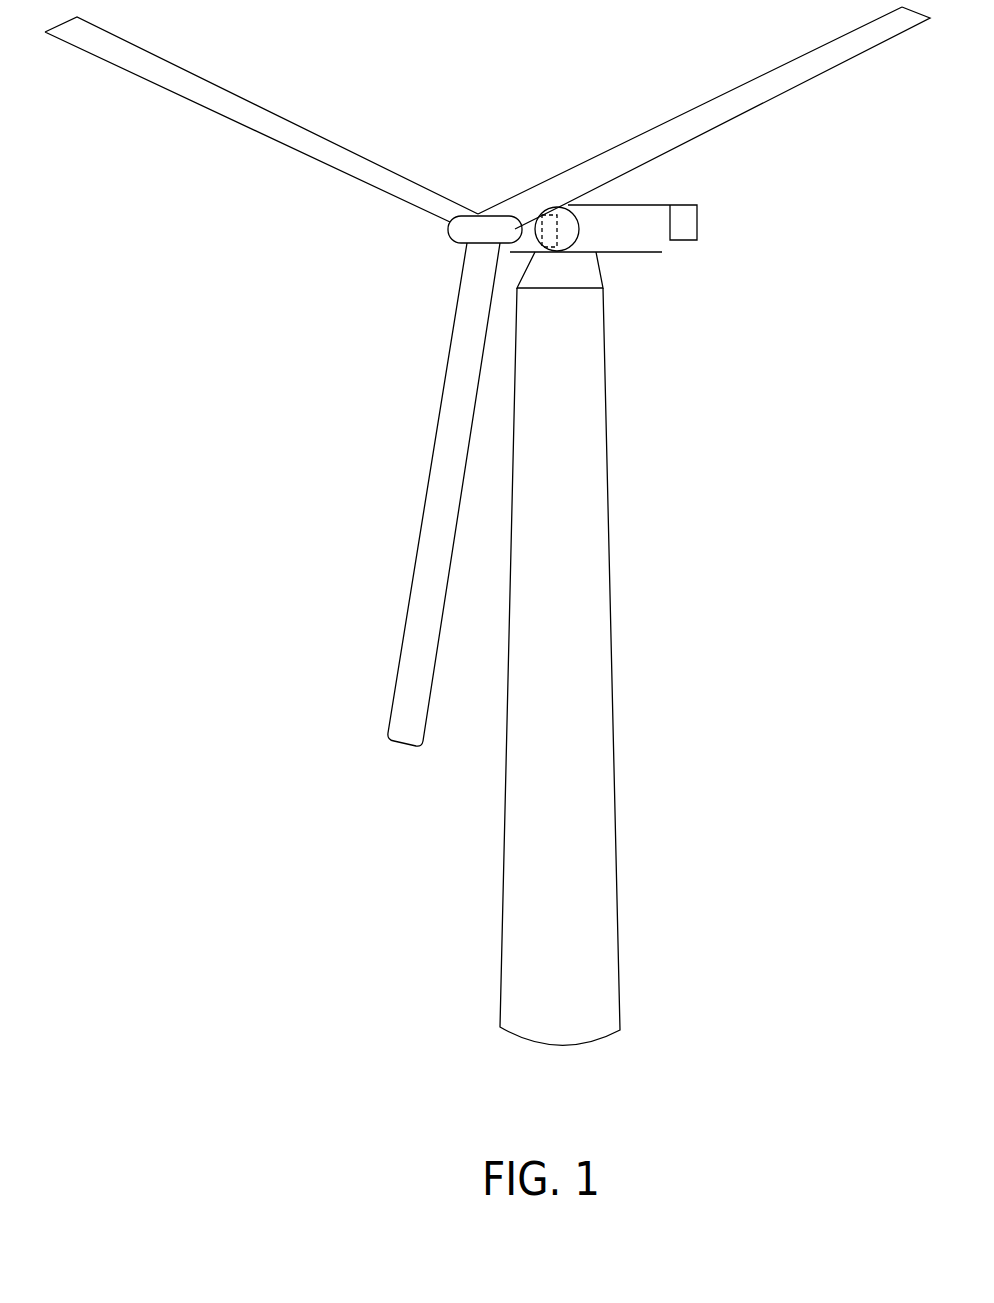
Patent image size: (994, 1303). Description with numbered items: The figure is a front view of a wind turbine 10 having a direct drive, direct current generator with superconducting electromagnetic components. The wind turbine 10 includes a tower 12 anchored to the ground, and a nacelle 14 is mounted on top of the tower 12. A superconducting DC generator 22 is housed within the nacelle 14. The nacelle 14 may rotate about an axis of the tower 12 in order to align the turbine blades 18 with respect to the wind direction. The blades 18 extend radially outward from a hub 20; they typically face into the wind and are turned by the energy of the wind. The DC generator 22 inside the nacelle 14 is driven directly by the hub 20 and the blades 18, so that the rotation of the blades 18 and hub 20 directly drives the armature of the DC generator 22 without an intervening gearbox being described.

The wind turbine 10 is at (214, 369).
The tower 12 is at (585, 682).
The nacelle 14 is at (655, 244).
The turbine blades 18 is at (779, 86).
The hub 20 is at (472, 227).
The superconducting DC generator 22 is at (555, 240).